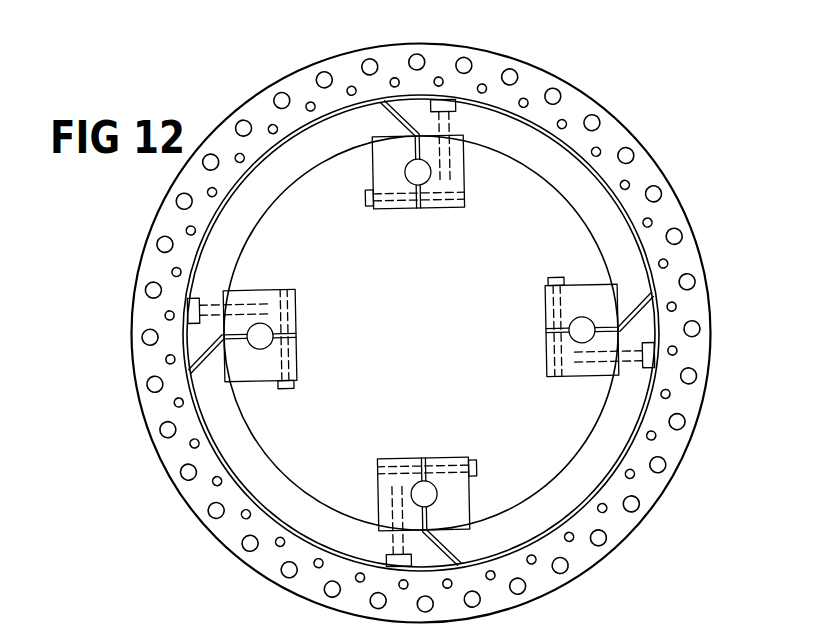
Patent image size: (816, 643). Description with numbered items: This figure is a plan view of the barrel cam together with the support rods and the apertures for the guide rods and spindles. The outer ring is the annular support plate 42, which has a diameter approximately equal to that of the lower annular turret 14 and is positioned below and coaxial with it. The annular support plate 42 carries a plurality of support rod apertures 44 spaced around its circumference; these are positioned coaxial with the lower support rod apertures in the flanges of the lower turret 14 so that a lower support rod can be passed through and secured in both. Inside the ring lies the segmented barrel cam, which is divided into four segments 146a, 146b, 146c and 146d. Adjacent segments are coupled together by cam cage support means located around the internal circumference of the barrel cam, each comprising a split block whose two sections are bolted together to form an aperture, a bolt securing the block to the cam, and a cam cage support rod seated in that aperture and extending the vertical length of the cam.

The lower annular turret 14 is at (653, 124).
The annular support plate 42 is at (447, 47).
The support rod apertures 44 is at (269, 125).
The barrel cam segment 146a is at (578, 458).
The barrel cam segment 146b is at (522, 153).
The barrel cam segment 146c is at (238, 237).
The barrel cam segment 146d is at (315, 465).